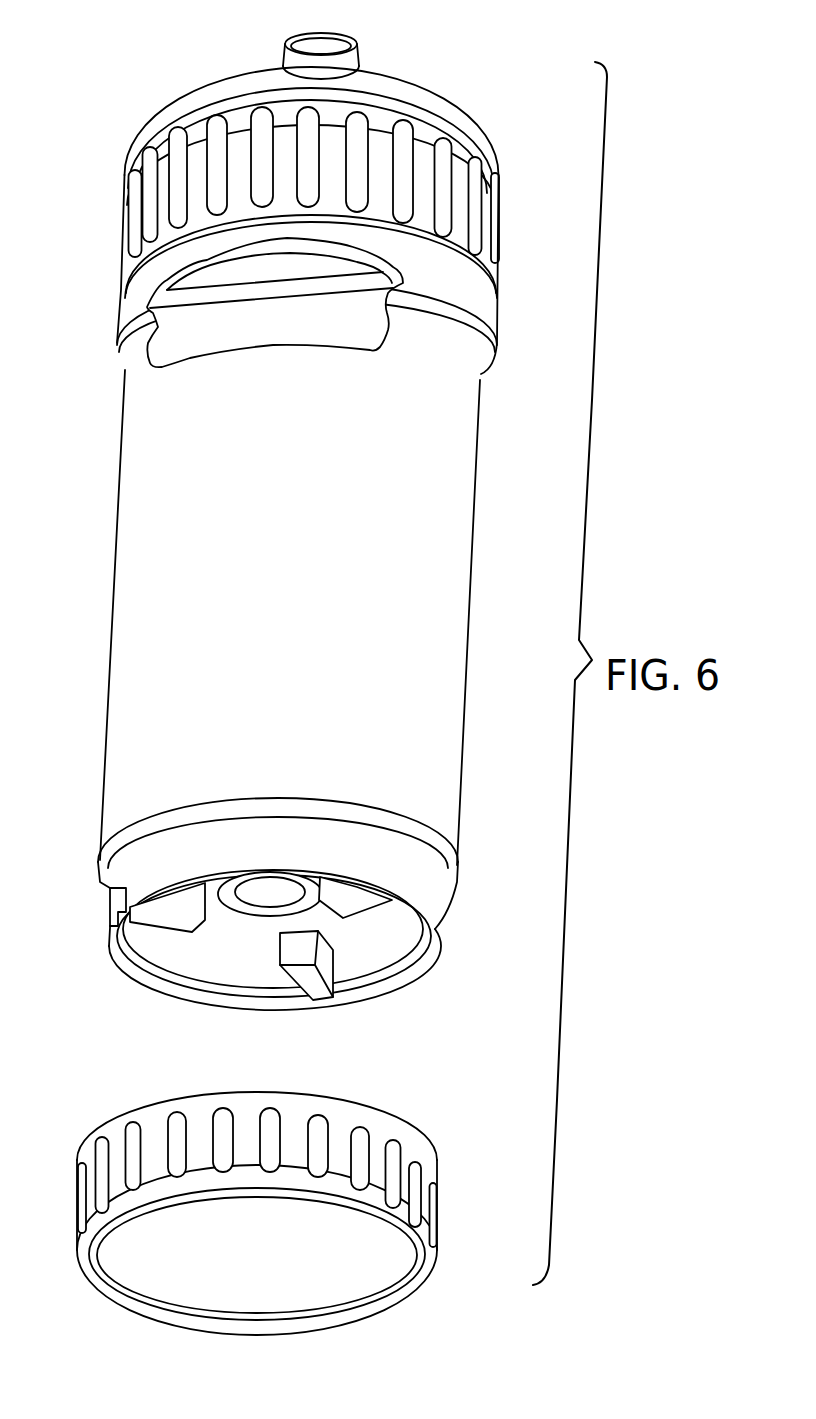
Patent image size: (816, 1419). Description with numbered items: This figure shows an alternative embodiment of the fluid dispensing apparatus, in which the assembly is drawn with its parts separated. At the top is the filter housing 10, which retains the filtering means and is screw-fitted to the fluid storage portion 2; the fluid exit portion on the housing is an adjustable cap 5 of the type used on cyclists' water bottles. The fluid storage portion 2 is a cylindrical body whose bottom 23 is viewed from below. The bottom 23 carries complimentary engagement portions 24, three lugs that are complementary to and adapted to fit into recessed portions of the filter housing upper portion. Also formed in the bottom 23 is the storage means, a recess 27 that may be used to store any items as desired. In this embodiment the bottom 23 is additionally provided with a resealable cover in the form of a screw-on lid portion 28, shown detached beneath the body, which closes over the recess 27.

The filter housing 10 is at (290, 676).
The adjustable cap 5 is at (363, 46).
The fluid storage portion 2 is at (120, 520).
The bottom 23 is at (313, 901).
The complimentary engagement portions 24 is at (160, 900).
The recess 27 is at (268, 893).
The screw-on lid portion 28 is at (272, 1262).